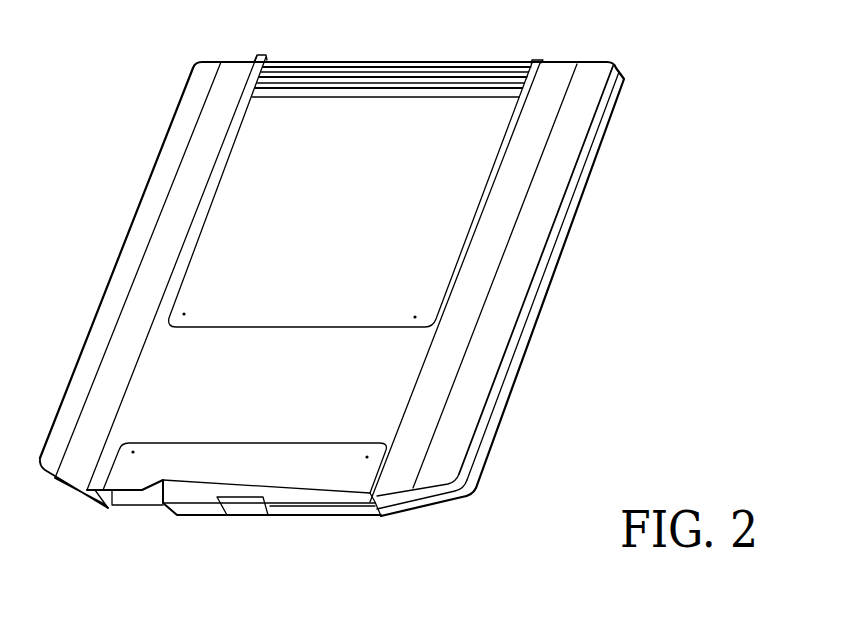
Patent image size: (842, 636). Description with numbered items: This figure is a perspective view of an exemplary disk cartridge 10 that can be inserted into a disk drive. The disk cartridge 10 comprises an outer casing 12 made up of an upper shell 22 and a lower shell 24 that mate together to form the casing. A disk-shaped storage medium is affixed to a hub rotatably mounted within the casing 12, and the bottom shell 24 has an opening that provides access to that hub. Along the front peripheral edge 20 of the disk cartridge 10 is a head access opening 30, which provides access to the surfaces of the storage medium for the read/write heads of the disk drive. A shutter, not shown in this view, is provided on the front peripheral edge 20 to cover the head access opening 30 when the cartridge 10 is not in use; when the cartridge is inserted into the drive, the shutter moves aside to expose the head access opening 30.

The disk cartridge 10 is at (164, 32).
The outer casing 12 is at (472, 62).
The front peripheral edge 20 is at (335, 516).
The upper shell 22 is at (446, 486).
The lower shell 24 is at (545, 296).
The head access opening 30 is at (247, 507).